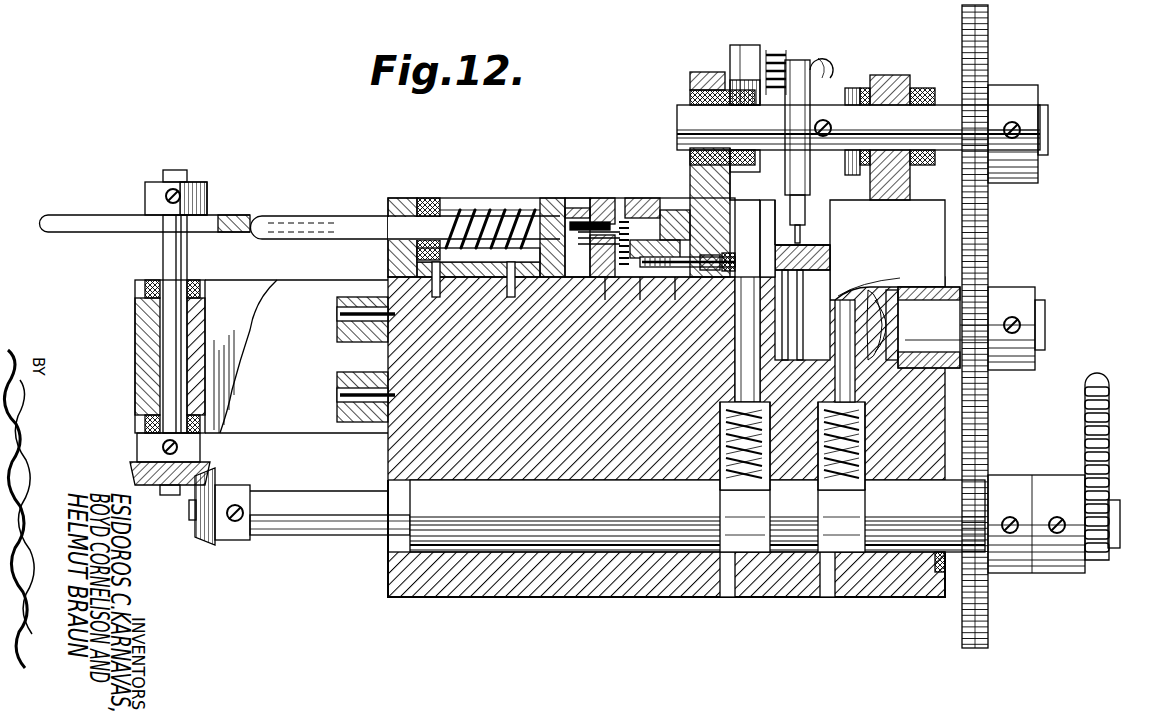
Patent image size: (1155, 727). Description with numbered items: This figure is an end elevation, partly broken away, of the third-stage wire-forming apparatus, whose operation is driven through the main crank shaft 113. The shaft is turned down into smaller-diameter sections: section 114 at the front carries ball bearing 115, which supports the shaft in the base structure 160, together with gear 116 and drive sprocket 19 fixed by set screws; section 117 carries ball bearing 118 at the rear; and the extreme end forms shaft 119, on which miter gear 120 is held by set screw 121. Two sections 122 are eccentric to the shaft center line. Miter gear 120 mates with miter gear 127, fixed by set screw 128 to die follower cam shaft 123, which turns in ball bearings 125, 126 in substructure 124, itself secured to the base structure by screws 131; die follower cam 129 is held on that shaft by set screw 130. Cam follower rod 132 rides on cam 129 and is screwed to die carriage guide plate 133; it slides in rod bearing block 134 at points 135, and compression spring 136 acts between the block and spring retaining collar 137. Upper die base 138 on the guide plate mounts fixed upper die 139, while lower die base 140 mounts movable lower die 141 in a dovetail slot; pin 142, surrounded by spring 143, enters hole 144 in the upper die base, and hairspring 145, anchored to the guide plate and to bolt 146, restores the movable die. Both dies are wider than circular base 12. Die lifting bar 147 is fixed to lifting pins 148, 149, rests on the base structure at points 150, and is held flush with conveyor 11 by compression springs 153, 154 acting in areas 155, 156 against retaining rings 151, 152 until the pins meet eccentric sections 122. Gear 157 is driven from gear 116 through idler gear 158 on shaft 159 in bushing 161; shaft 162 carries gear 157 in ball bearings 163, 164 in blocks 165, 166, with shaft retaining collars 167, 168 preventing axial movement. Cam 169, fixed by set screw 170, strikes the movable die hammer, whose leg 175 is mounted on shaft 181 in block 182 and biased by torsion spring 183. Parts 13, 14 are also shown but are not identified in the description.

The conveyor 11 is at (820, 272).
The circular base 12 is at (812, 258).
The pin 13 is at (785, 360).
The pin 14 is at (801, 360).
The drive sprocket 19 is at (1097, 375).
The main crank shaft 113 is at (625, 560).
The section 114 is at (1115, 500).
The ball bearing 115 is at (935, 570).
The gear 116 is at (988, 600).
The section 117 is at (335, 537).
The ball bearing 118 is at (400, 580).
The shaft 119 is at (189, 515).
The miter gear 120 is at (208, 545).
The set screw 121 is at (245, 540).
The eccentric sections 122 is at (730, 560).
The die follower cam shaft 123 is at (168, 495).
The substructure 124 is at (135, 352).
The ball bearing 125 is at (143, 408).
The ball bearing 126 is at (143, 289).
The miter gear 127 is at (133, 474).
The set screw 128 is at (160, 445).
The die follower cam 129 is at (95, 213).
The set screw 130 is at (180, 188).
The screws 131 is at (337, 314).
The cam follower rod 132 is at (305, 214).
The die carriage guide plate 133 is at (580, 205).
The rod bearing block 134 is at (550, 198).
The points 135 is at (400, 198).
The compression spring 136 is at (470, 205).
The spring retaining collar 137 is at (430, 205).
The upper die base 138 is at (605, 198).
The fixed upper die 139 is at (690, 185).
The lower die base 140 is at (650, 282).
The movable lower die 141 is at (685, 282).
The pin 142 is at (620, 282).
The spring 143 is at (632, 252).
The hole 144 is at (634, 204).
The hairspring 145 is at (718, 250).
The bolt 146 is at (730, 256).
The die lifting bar 147 is at (738, 290).
The lifting pin 148 is at (856, 390).
The lifting pin 149 is at (735, 365).
The points 150 is at (860, 278).
The retaining ring 151 is at (745, 495).
The retaining ring 152 is at (845, 495).
The compression spring 153 is at (720, 438).
The compression spring 154 is at (866, 440).
The area 155 is at (724, 412).
The area 156 is at (866, 412).
The gear 157 is at (988, 52).
The idler gear 158 is at (992, 270).
The shaft 159 is at (1045, 320).
The base structure 160 is at (560, 575).
The bushing 161 is at (995, 282).
The shaft 162 is at (1048, 112).
The ball bearing 163 is at (920, 88).
The ball bearing 164 is at (690, 97).
The block 165 is at (890, 75).
The block 166 is at (708, 72).
The shaft retaining collar 167 is at (745, 45).
The shaft retaining collar 168 is at (853, 88).
The cam 169 is at (797, 60).
The set screw 170 is at (828, 120).
The leg 175 is at (805, 210).
The shaft 181 is at (822, 58).
The block 182 is at (735, 50).
The torsion spring 183 is at (775, 50).